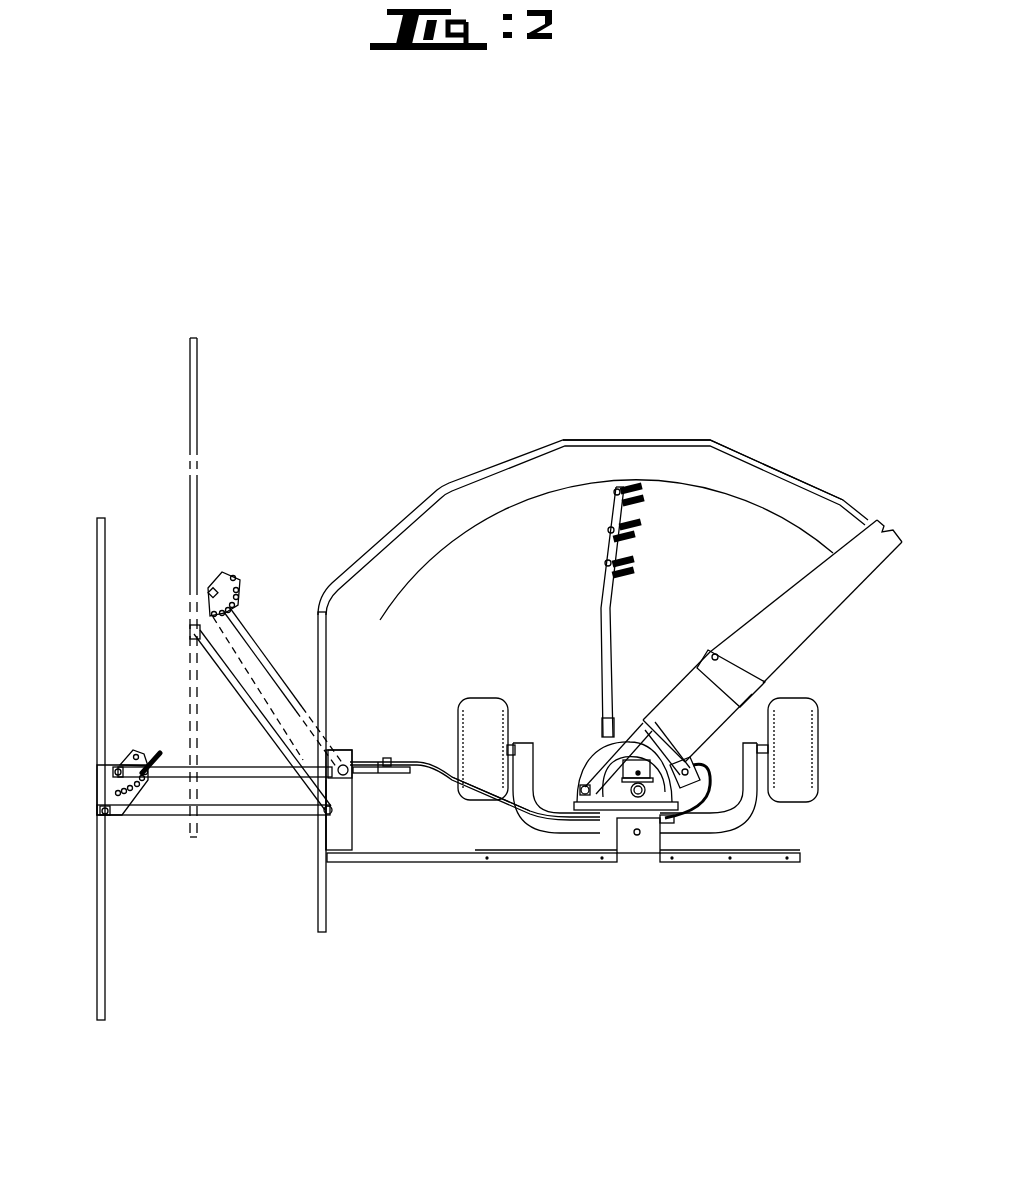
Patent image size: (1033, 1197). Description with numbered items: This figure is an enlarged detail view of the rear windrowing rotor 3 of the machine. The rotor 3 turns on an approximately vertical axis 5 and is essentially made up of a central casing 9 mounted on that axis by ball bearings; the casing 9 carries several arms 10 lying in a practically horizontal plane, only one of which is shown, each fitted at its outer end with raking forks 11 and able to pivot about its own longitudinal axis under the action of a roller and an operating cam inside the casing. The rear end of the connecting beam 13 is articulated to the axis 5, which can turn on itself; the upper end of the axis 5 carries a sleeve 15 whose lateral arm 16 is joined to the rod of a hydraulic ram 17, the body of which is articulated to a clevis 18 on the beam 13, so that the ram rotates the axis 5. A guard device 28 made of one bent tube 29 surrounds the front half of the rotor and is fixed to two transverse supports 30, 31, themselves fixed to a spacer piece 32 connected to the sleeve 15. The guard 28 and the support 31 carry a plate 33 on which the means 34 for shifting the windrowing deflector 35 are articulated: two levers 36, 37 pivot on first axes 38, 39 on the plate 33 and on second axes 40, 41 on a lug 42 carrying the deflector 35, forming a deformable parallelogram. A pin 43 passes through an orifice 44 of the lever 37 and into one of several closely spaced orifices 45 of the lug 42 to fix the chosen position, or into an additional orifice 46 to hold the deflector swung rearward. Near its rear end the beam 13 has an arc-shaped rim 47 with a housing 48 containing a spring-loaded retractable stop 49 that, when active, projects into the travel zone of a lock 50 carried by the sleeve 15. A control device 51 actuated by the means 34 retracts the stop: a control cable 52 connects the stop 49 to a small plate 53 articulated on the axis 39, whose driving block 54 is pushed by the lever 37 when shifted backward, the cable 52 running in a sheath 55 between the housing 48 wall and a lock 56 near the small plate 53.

The windrowing rotor 3 is at (440, 550).
The approximately vertical axis 5 is at (636, 798).
The central casing 9 is at (593, 765).
The arm 10 is at (610, 543).
The raking forks 11 is at (633, 577).
The connecting beam 13 is at (842, 572).
The sleeve 15 is at (650, 806).
The lateral arm 16 is at (596, 790).
The hydraulic ram 17 is at (700, 667).
The clevis 18 is at (742, 682).
The guard device 28 is at (697, 437).
The bent tube 29 is at (507, 467).
The transverse support 30 is at (696, 862).
The transverse support 31 is at (397, 862).
The spacer piece 32 is at (650, 862).
The plate 33 is at (343, 835).
The means for shifting the windrowing deflector 34 is at (210, 822).
The windrowing deflector 35 is at (105, 542).
The lever 36 is at (268, 812).
The lever 37 is at (246, 672).
The first axis 38 is at (330, 808).
The first axis 39 is at (343, 763).
The second axis 40 is at (105, 815).
The second axis 41 is at (113, 773).
The lug 42 is at (107, 797).
The pin 43 is at (152, 760).
The orifice 44 is at (148, 772).
The orifices 45 is at (149, 800).
The additional orifice 46 is at (122, 766).
The rim 47 is at (663, 750).
The housing 48 is at (675, 778).
The retractable stop 49 is at (672, 815).
The lock 50 is at (625, 757).
The control device 51 is at (418, 758).
The control cable 52 is at (385, 758).
The small plate 53 is at (286, 740).
The driving block 54 is at (345, 778).
The sheath 55 is at (540, 812).
The lock 56 is at (378, 768).